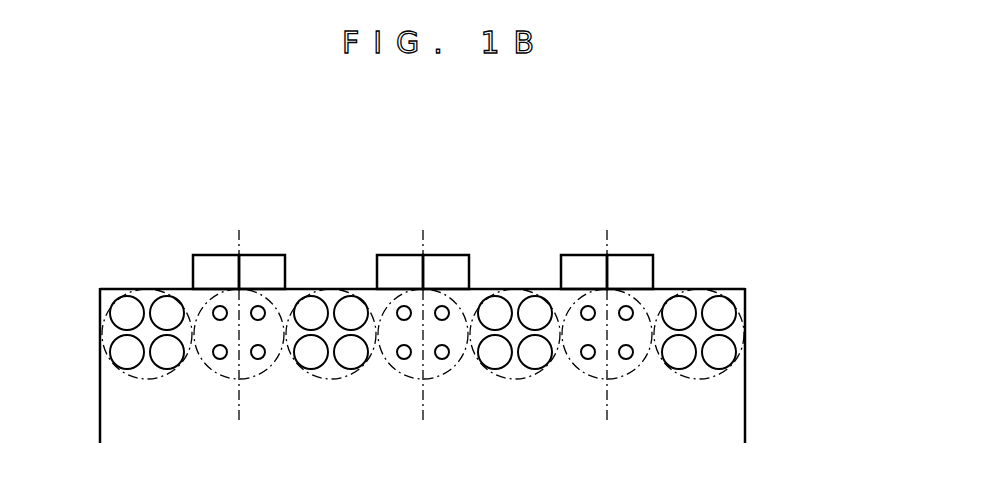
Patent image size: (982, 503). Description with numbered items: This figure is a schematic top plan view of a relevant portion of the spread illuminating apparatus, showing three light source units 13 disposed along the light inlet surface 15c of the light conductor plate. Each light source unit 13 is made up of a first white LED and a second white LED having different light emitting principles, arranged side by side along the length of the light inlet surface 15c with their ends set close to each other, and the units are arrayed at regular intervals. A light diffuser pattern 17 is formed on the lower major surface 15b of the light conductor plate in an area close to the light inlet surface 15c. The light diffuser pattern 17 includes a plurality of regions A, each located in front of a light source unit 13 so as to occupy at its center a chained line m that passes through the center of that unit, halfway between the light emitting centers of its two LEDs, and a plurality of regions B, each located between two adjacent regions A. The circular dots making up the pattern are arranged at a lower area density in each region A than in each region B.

The light source unit 13 is at (423, 213).
The lower major surface 15b is at (745, 382).
The light inlet surface 15c is at (735, 288).
The light diffuser pattern 17 is at (122, 311).
The region A is at (299, 288).
The region B is at (168, 288).
The chained line m is at (238, 396).